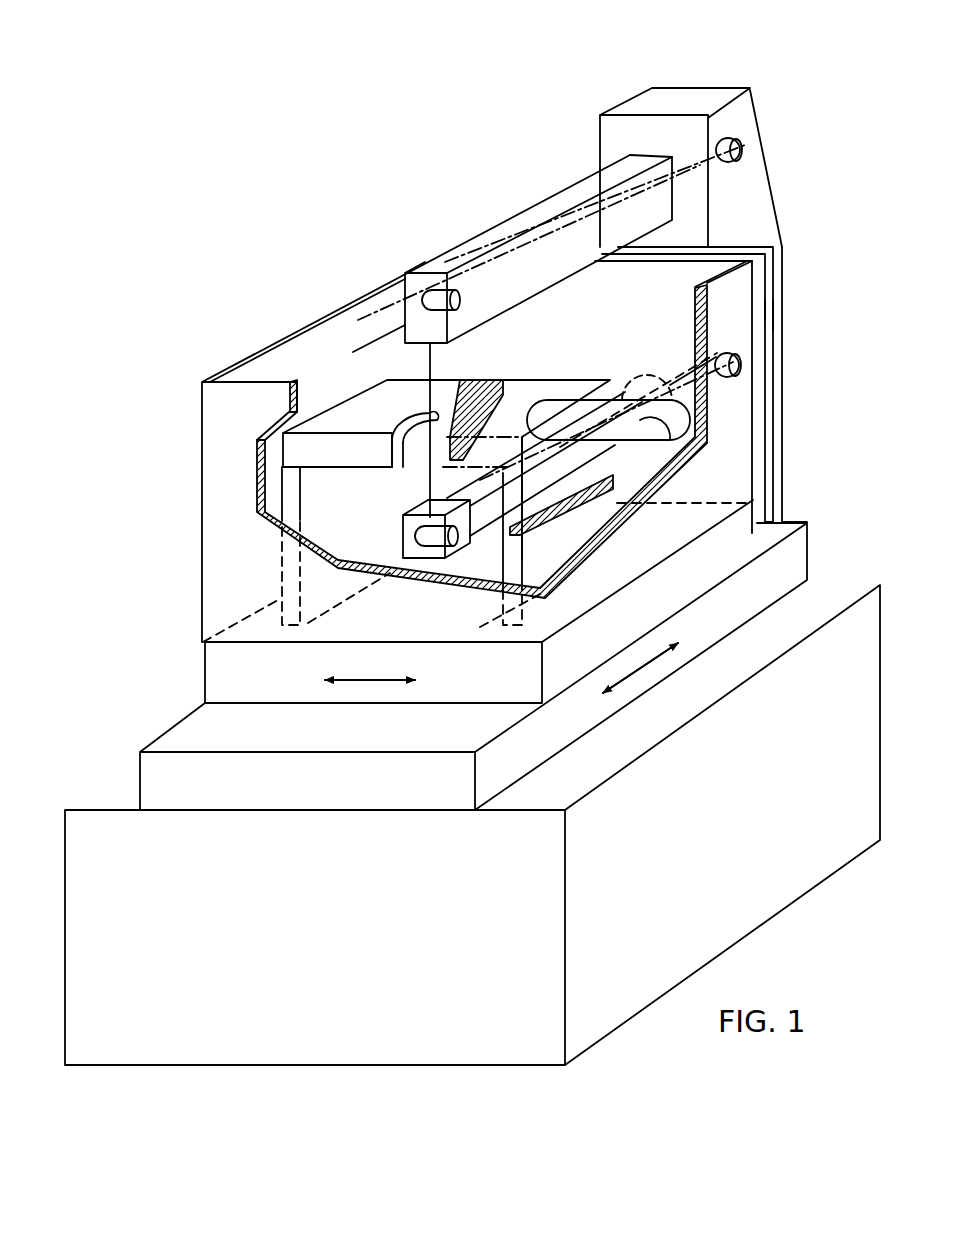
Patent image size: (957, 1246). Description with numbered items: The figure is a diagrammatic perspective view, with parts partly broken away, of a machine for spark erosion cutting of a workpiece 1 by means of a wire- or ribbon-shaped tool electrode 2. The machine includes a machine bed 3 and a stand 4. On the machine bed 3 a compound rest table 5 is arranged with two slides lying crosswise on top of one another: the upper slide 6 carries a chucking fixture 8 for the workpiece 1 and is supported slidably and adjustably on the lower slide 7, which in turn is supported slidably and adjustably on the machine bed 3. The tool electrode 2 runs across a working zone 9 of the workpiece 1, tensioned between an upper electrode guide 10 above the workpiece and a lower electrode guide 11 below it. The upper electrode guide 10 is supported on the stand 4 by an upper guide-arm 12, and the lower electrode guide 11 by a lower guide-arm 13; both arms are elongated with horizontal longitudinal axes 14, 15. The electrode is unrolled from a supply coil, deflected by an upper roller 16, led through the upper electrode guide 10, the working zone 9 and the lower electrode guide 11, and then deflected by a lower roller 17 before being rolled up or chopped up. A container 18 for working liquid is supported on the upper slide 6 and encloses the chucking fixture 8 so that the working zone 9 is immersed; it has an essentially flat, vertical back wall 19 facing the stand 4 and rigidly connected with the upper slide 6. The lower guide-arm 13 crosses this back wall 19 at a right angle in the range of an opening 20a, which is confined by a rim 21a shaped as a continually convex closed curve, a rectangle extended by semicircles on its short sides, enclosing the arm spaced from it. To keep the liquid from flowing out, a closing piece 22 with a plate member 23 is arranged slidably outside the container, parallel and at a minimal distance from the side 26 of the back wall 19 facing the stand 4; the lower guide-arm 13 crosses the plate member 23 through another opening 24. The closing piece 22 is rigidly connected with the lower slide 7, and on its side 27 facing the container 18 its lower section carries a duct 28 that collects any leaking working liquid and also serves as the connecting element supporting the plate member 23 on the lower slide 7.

The workpiece 1 is at (340, 392).
The tool electrode 2 is at (433, 352).
The machine bed 3 is at (790, 858).
The stand 4 is at (690, 78).
The compound rest table 5 is at (140, 708).
The upper slide 6 is at (210, 668).
The lower slide 7 is at (200, 797).
The chucking fixture 8 is at (336, 522).
The working zone 9 is at (428, 412).
The upper electrode guide 10 is at (412, 283).
The lower electrode guide 11 is at (412, 534).
The upper guide-arm 12 is at (498, 208).
The lower guide-arm 13 is at (486, 540).
The longitudinal axis 14 is at (372, 342).
The longitudinal axis 15 is at (680, 377).
The upper roller 16 is at (748, 146).
The lower roller 17 is at (727, 378).
The container 18 is at (260, 336).
The back wall 19 is at (612, 307).
The opening 20a is at (656, 430).
The rim 21a is at (560, 398).
The closing piece 22 is at (777, 427).
The plate member 23 is at (775, 301).
The other opening 24 is at (615, 400).
The side of the back wall 26 is at (703, 284).
The side of the closing piece 27 is at (768, 280).
The duct 28 is at (770, 502).